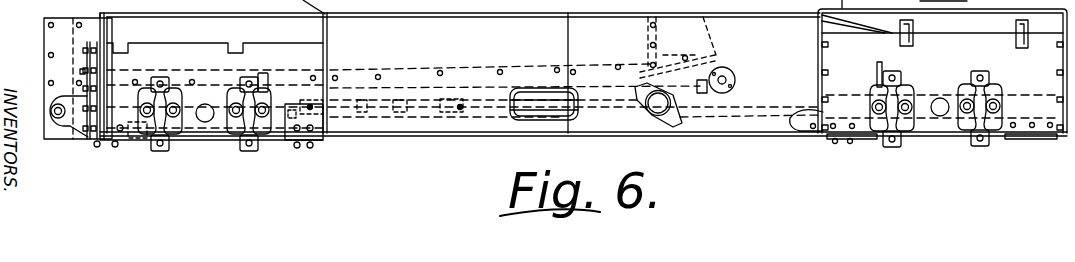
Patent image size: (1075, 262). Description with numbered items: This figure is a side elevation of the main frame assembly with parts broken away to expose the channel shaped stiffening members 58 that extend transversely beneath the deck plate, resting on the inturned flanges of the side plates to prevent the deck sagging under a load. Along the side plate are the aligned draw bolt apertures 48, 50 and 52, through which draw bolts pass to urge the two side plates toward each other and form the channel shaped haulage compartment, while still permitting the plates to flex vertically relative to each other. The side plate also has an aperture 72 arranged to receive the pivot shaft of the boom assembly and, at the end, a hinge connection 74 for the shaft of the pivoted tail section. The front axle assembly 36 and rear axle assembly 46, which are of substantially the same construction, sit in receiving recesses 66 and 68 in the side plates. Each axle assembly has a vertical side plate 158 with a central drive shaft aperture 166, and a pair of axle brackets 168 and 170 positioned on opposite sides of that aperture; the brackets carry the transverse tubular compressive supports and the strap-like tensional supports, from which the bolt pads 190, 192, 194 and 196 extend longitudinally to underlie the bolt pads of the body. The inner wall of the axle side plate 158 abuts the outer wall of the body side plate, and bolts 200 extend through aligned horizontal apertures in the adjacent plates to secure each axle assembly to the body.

The front axle assembly 36 is at (940, 142).
The rear axle assembly 46 is at (206, 165).
The draw bolt aperture 48 is at (706, 78).
The draw bolt aperture 50 is at (460, 107).
The draw bolt aperture 52 is at (310, 107).
The channel shaped stiffening member 58 is at (530, 114).
The receiving recess 66 is at (1027, 94).
The receiving recess 68 is at (130, 152).
The aperture 72 is at (735, 78).
The hinge connection 74 is at (68, 124).
The vertical side plate 158 is at (215, 65).
The central drive shaft aperture 166 is at (200, 118).
The axle bracket 168 is at (150, 91).
The axle bracket 170 is at (222, 91).
The bolt pad 190 is at (870, 138).
The bolt pad 192 is at (1013, 140).
The bolt pad 194 is at (283, 143).
The bolt pad 196 is at (105, 147).
The bolt 200 is at (812, 121).